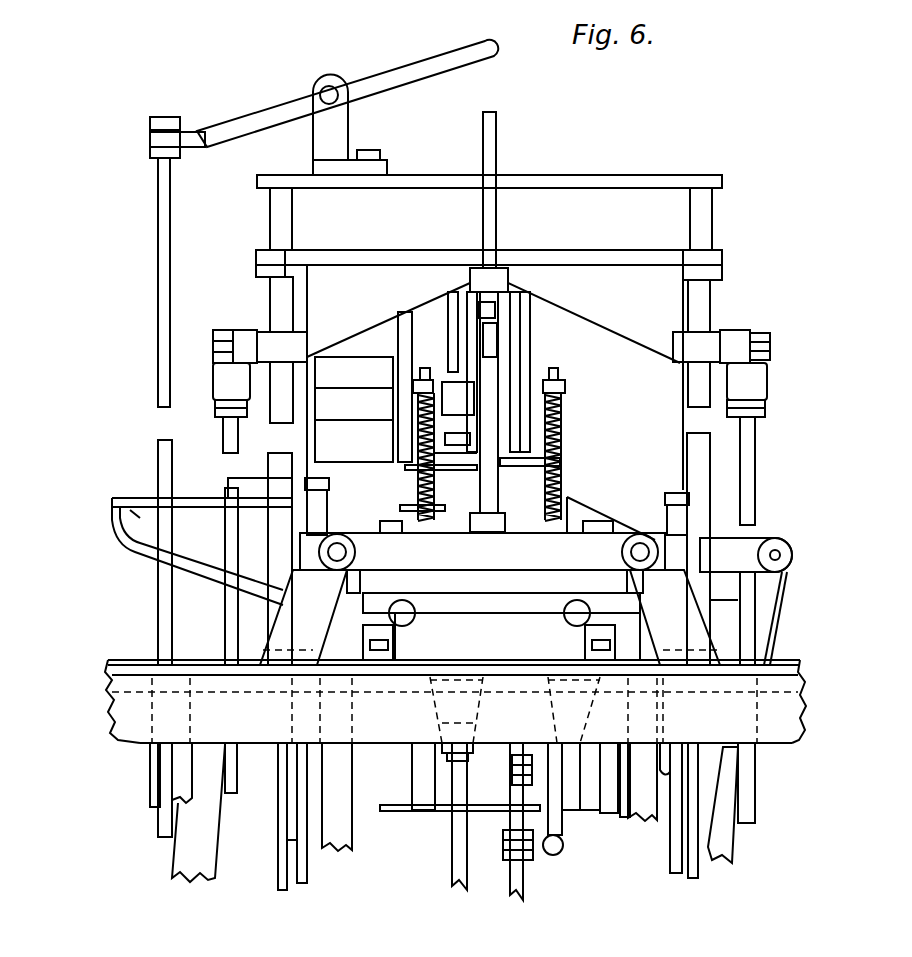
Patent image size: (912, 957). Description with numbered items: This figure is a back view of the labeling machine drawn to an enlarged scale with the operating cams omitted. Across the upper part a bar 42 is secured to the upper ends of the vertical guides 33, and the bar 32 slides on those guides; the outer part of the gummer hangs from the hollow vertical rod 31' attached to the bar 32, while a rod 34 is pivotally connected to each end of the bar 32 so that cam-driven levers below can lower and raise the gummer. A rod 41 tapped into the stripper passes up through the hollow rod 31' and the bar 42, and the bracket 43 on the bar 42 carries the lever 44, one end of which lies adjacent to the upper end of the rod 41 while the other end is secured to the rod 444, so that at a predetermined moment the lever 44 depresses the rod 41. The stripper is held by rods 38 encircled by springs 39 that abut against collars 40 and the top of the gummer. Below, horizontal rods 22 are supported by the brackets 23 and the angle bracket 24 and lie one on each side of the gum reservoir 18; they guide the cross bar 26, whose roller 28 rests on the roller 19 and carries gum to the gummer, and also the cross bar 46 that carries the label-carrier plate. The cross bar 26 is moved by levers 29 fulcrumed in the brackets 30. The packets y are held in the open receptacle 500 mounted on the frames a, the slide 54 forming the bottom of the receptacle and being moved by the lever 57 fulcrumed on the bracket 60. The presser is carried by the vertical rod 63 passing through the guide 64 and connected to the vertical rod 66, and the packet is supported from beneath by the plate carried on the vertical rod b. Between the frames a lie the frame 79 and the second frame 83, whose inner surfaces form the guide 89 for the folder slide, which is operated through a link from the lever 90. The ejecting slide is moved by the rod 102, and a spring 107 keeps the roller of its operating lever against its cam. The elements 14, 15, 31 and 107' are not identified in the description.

The frame post 14 is at (410, 793).
The cross bar 15 is at (400, 811).
The gum reservoir 18 is at (517, 636).
The roller 19 is at (500, 583).
The horizontal rods 22 is at (340, 552).
The bracket 23 is at (490, 617).
The angle bracket 24 is at (588, 510).
The cross bar 26 is at (482, 551).
The roller 28 is at (482, 600).
The levers 29 is at (310, 507).
The bracket 30 is at (472, 797).
The column 31 is at (487, 412).
The hollow vertical rod 31' is at (520, 323).
The bar 32 is at (489, 265).
The vertical guides 33 is at (290, 227).
The rod 34 is at (228, 333).
The rods 38 is at (560, 462).
The springs 39 is at (553, 428).
The collars 40 is at (430, 382).
The rod 41 is at (497, 145).
The bar 42 is at (523, 176).
The bracket 43 is at (328, 142).
The lever 44 is at (347, 93).
The cross bar 46 is at (400, 533).
The slide 54 is at (255, 487).
The lever 57 is at (198, 813).
The bracket 60 is at (155, 772).
The vertical rod 63 is at (456, 327).
The guide 64 is at (458, 398).
The vertical rod 66 is at (513, 365).
The frame 79 is at (260, 645).
The second frame 83 is at (734, 618).
The guide 89 is at (753, 543).
The lever 90 is at (775, 595).
The rod 102 is at (518, 873).
The spring 107 is at (574, 848).
The rod 107' is at (577, 789).
The rod 444 is at (172, 181).
The receptacle 500 is at (398, 352).
The frames a is at (326, 523).
The vertical rod b is at (460, 802).
The packet y is at (350, 393).